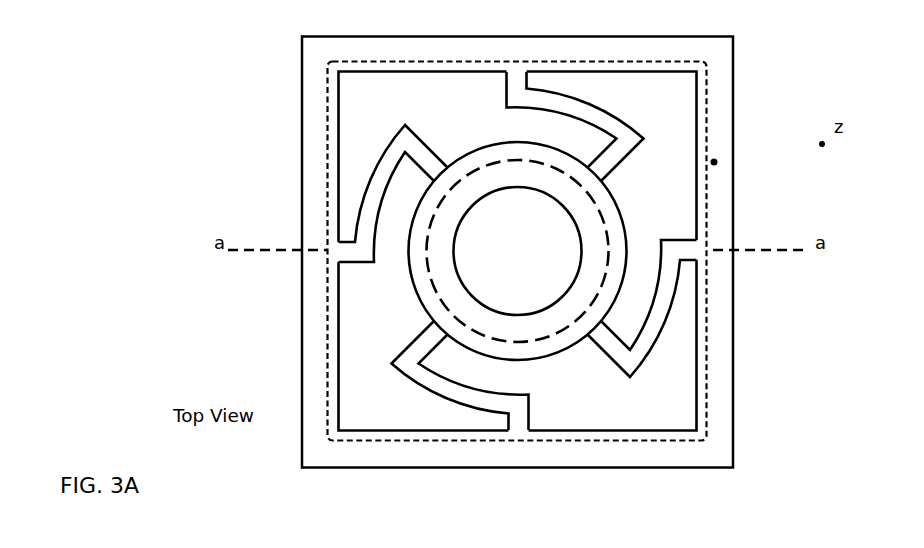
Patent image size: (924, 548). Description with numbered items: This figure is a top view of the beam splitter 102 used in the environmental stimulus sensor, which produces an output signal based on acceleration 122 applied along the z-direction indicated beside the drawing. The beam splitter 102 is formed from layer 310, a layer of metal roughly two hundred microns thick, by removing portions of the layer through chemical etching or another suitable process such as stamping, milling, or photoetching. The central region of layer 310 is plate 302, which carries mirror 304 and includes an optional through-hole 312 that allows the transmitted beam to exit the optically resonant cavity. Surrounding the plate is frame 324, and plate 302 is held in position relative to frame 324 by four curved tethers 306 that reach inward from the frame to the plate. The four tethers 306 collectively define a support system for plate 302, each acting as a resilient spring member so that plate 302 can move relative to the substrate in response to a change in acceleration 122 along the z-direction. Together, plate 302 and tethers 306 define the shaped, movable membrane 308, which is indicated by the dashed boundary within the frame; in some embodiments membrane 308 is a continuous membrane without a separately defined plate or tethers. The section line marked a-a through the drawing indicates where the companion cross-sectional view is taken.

The beam splitter 102 is at (166, 82).
The acceleration 122 is at (714, 162).
The plate 302 is at (535, 360).
The mirror 304 is at (473, 175).
The tethers 306 is at (664, 244).
The shaped, movable membrane 308 is at (707, 392).
The layer 310 is at (733, 323).
The through-hole 312 is at (549, 262).
The frame 324 is at (718, 268).